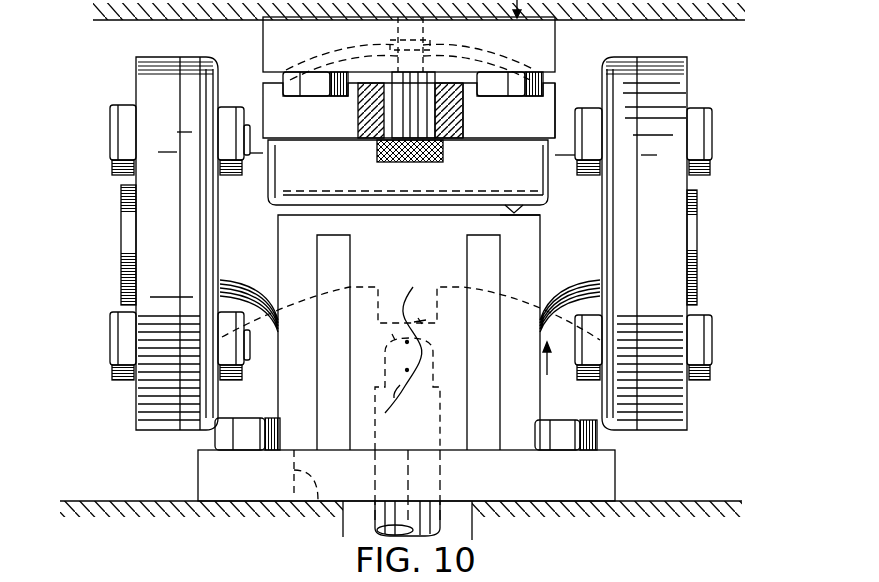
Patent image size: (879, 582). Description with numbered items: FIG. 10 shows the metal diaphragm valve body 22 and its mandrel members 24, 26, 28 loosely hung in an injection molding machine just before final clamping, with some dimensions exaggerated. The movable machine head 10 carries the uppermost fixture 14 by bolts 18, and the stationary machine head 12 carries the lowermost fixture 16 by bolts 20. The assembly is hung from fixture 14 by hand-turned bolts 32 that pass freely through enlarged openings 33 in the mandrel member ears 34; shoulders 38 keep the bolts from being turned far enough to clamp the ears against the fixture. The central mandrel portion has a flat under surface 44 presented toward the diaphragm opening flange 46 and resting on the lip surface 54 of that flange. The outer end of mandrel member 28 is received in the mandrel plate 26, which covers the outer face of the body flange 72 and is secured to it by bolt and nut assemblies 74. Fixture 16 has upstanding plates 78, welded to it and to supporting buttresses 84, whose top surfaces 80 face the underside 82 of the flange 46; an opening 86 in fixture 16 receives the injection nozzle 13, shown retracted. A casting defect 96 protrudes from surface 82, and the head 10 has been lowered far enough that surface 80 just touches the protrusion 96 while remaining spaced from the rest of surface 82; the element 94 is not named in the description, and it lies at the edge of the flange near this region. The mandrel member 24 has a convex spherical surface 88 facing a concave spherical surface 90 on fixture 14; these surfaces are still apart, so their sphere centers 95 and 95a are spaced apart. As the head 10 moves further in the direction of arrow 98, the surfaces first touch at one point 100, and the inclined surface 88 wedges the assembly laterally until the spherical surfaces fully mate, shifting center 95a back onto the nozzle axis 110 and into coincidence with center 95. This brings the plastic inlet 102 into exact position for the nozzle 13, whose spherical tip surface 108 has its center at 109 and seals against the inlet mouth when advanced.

The movable injection molding machine head 10 is at (690, 22).
The stationary injection molding machine head 12 is at (695, 501).
The injection nozzle 13 is at (447, 519).
The uppermost fixture 14 is at (540, 50).
The lowermost fixture 16 is at (598, 470).
The bolt 18 is at (283, 80).
The bolt 20 is at (262, 418).
The metal diaphragm valve body 22 is at (557, 369).
The mandrel member 24 is at (558, 100).
The mandrel plate 26 is at (136, 80).
The mandrel member 28 is at (128, 229).
The hand-turned bolt 32 is at (370, 86).
The enlarged opening 33 is at (448, 86).
The mandrel member ear 34 is at (463, 118).
The shoulder 38 is at (400, 88).
The under surface 44 is at (346, 141).
The diaphragm opening flange 46 is at (527, 172).
The lip surface 54 is at (312, 138).
The body flange 72 is at (196, 430).
The bolt and nut assembly 74 is at (705, 135).
The upstanding plate 78 is at (532, 405).
The top surface 80 is at (482, 216).
The underside 82 is at (364, 212).
The supporting buttress 84 is at (333, 371).
The opening 86 is at (316, 506).
The convex spherical surface 88 is at (328, 58).
The concave spherical surface 90 is at (520, 72).
The ledge 94 is at (510, 213).
The sphere center 95 is at (411, 344).
The sphere center 95a is at (426, 410).
The casting defect 96 is at (525, 207).
The arrow 98 is at (534, 12).
The point of initial engagement 100 is at (515, 92).
The plastic inlet 102 is at (419, 319).
The nozzle tip surface 108 is at (395, 340).
The sphere center 109 is at (405, 408).
The nozzle axis 110 is at (412, 475).